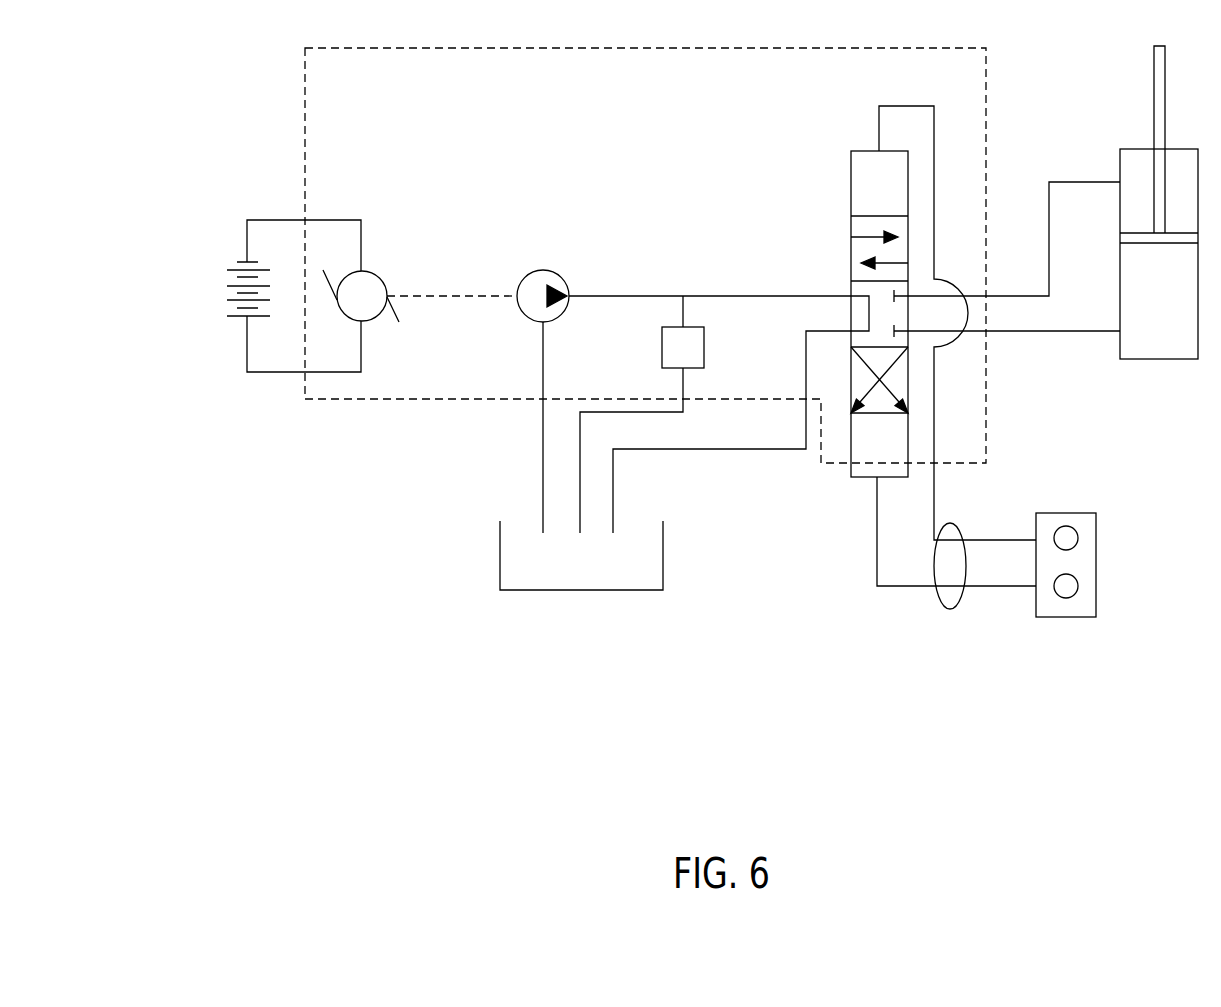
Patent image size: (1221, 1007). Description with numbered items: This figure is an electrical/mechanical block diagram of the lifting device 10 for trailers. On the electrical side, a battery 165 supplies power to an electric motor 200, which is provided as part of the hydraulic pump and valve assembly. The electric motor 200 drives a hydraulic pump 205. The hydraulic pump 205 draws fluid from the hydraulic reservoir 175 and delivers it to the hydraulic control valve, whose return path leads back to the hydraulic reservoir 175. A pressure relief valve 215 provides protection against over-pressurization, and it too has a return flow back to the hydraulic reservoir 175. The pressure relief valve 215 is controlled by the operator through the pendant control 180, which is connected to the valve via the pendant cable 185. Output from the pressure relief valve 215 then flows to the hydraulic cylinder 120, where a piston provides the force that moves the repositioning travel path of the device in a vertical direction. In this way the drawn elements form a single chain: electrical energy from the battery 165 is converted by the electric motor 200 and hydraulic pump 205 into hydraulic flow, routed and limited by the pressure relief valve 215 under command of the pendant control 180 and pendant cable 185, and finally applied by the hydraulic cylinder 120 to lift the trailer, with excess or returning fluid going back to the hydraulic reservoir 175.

The device 10 is at (263, 722).
The hydraulic cylinder 120 is at (1174, 343).
The battery 165 is at (247, 316).
The hydraulic reservoir 175 is at (580, 590).
The pendant control 180 is at (1087, 617).
The pendant cable 185 is at (958, 607).
The electric motor 200 is at (366, 303).
The hydraulic pump 205 is at (537, 307).
The pressure relief valve 215 is at (877, 198).